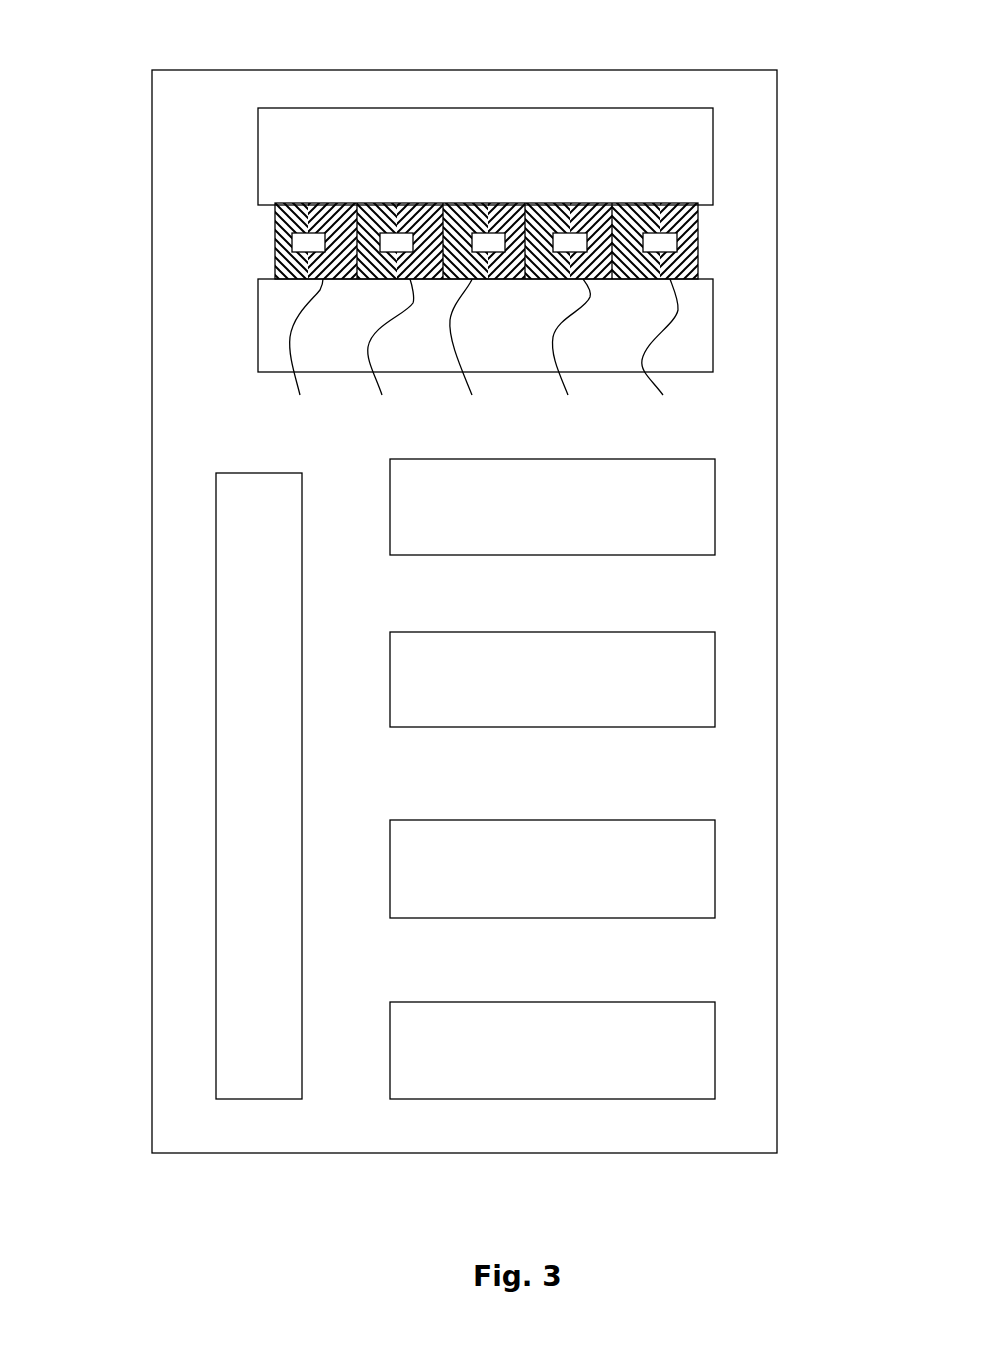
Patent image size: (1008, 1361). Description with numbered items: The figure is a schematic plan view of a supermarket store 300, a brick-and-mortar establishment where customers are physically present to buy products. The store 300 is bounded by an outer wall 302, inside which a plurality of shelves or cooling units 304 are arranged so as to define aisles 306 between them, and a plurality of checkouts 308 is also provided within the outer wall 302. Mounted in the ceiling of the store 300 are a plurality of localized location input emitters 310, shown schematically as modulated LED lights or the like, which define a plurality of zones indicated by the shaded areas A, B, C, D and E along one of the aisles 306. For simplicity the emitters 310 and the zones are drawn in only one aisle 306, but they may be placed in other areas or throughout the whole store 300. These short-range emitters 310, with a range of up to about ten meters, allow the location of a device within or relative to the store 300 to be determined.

The supermarket store 300 is at (803, 202).
The outer wall 302 is at (777, 313).
The shelves or cooling units 304 is at (485, 160).
The aisles 306 is at (715, 92).
The checkouts 308 is at (273, 722).
The localized location input emitters 310 is at (407, 205).